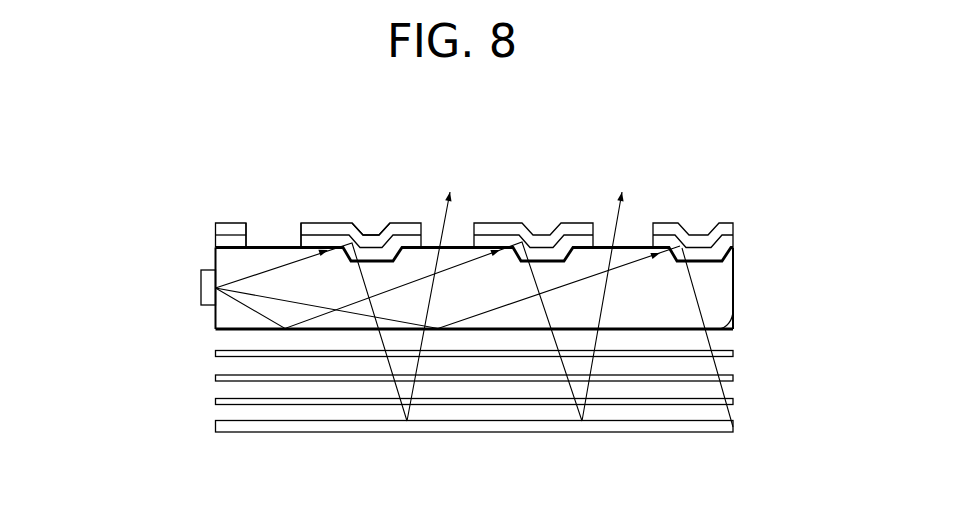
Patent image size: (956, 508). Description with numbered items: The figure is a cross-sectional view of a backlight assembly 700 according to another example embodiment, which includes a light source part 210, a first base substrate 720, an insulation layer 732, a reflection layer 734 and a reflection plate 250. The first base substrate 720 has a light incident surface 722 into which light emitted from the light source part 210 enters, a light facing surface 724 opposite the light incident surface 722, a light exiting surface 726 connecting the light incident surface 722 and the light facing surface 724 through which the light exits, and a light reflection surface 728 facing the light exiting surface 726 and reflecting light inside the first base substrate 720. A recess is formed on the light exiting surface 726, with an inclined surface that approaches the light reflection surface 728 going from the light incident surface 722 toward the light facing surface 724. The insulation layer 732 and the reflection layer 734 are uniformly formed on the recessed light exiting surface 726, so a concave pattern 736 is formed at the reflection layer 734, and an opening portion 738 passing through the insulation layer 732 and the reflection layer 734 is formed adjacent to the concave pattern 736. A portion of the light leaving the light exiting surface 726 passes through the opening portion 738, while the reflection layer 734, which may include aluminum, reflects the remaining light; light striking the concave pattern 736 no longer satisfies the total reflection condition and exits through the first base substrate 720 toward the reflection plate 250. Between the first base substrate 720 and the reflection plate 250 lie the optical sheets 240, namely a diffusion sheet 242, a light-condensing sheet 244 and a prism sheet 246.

The backlight assembly 700 is at (70, 430).
The light source part 210 is at (201, 289).
The optical sheets 240 is at (118, 343).
The diffusion sheet 242 is at (215, 401).
The light-condensing sheet 244 is at (215, 378).
The prism sheet 246 is at (215, 354).
The reflection plate 250 is at (215, 426).
The first base substrate 720 is at (232, 323).
The light incident surface 722 is at (215, 315).
The light facing surface 724 is at (733, 283).
The light exiting surface 726 is at (258, 248).
The light reflection surface 728 is at (733, 310).
The insulation layer 732 is at (215, 235).
The reflection layer 734 is at (214, 223).
The concave pattern 736 is at (372, 226).
The opening portion 738 is at (277, 232).